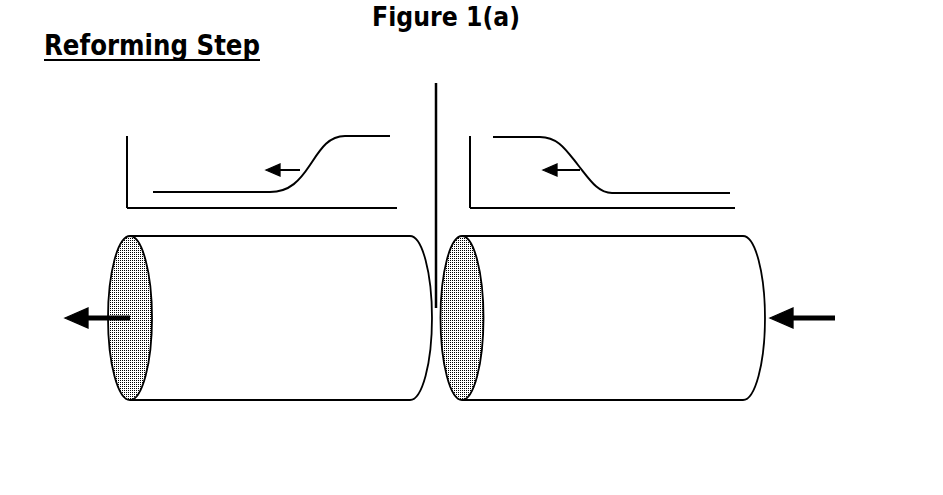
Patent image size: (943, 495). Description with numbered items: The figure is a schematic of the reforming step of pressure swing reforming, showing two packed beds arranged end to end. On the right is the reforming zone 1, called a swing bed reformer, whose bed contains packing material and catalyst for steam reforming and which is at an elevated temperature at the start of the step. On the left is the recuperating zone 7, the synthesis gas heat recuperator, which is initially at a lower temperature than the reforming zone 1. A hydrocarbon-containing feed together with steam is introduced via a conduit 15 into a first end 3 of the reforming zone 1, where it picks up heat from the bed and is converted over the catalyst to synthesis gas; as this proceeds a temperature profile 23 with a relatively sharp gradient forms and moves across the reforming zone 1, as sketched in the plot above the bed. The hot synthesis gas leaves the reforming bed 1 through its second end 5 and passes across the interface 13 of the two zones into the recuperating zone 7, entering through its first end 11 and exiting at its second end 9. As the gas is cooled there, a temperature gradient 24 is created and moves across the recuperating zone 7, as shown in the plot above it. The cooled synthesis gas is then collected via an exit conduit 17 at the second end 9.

The reforming zone 1 is at (628, 350).
The first end of the reforming zone 3 is at (758, 372).
The second end of the reforming zone 5 is at (479, 360).
The recuperating zone 7 is at (262, 362).
The second end of the recuperating zone 9 is at (145, 359).
The first end of the recuperating zone 11 is at (427, 362).
The interface 13 is at (436, 183).
The conduit 15 is at (807, 318).
The exit conduit 17 is at (97, 322).
The temperature profile 23 is at (573, 160).
The temperature gradient 24 is at (301, 170).